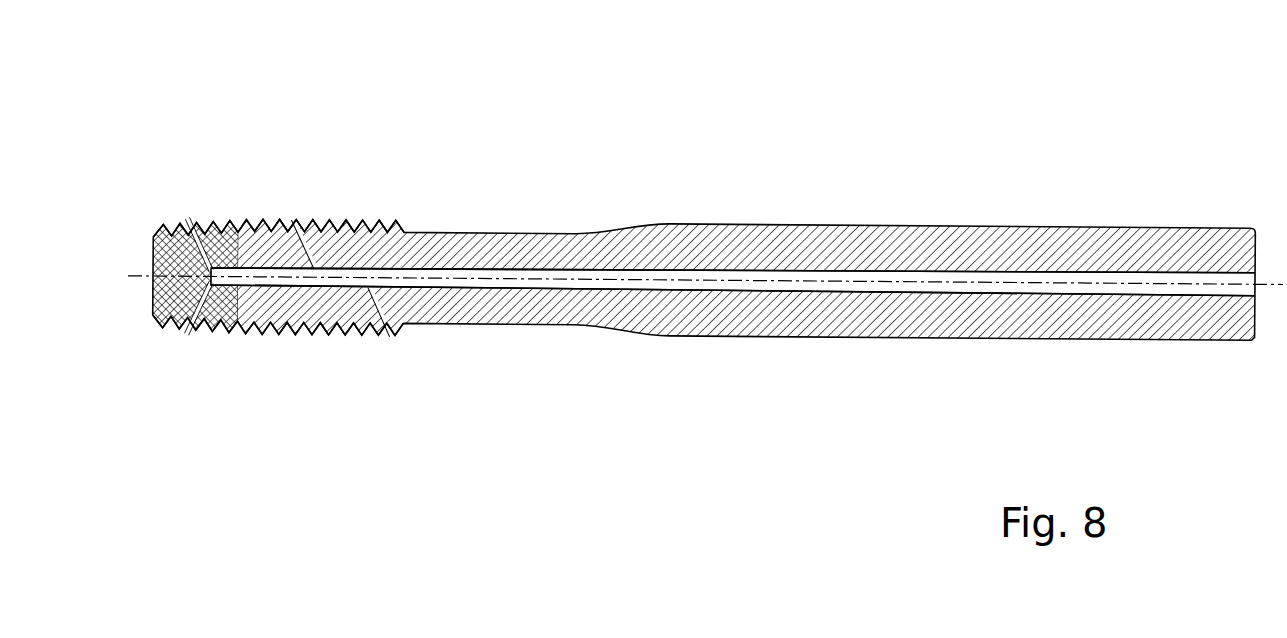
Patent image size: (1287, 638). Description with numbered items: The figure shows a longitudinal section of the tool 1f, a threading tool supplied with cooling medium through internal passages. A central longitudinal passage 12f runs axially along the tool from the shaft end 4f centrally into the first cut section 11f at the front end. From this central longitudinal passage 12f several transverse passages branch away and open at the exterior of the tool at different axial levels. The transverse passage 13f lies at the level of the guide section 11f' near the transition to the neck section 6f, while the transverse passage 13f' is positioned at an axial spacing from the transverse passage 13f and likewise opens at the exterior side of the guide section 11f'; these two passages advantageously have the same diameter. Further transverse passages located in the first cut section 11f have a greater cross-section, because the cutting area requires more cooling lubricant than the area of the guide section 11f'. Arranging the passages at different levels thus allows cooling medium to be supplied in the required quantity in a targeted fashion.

The tool 1f is at (871, 207).
The shaft end 4f is at (1257, 244).
The neck section 6f is at (452, 242).
The first cut section 11f is at (704, 216).
The guide section 11f' is at (279, 322).
The central longitudinal passage 12f is at (513, 272).
The transverse passage 13f is at (414, 347).
The transverse passage 13f' is at (336, 195).